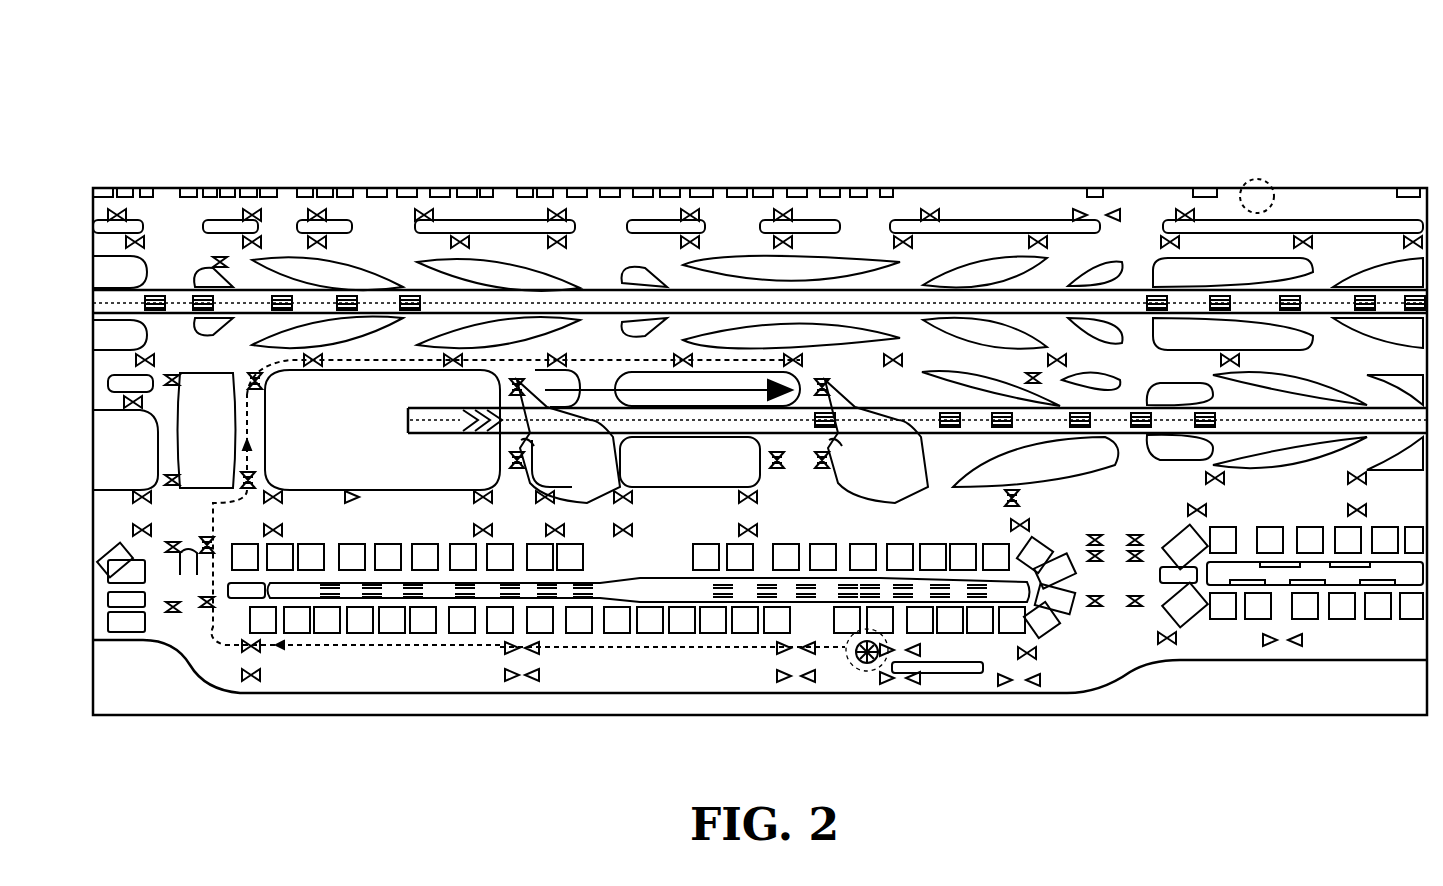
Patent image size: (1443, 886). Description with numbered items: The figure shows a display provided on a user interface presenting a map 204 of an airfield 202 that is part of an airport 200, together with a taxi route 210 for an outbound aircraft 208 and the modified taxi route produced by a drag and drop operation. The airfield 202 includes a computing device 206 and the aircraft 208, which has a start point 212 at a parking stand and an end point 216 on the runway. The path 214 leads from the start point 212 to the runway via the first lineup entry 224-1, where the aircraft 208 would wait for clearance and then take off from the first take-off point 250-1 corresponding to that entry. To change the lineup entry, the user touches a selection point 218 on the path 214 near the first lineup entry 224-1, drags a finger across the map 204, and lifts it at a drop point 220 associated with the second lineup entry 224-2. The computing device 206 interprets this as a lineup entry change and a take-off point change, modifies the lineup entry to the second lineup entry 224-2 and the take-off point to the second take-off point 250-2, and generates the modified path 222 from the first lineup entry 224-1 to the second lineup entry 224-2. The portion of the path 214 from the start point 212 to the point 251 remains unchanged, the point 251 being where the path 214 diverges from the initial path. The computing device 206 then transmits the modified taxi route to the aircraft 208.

The airport 200 is at (313, 75).
The airfield 202 is at (140, 186).
The map 204 is at (92, 330).
The computing device 206 is at (1257, 178).
The aircraft 208 is at (892, 673).
The taxi route 210 is at (428, 652).
The start point 212 is at (850, 662).
The path 214 is at (622, 650).
The end point 216 is at (920, 378).
The selection point 218 is at (533, 378).
The drop point 220 is at (900, 378).
The modified path 222 is at (660, 372).
The first lineup entry 224-1 is at (545, 375).
The second lineup entry 224-2 is at (820, 378).
The first take-off point 250-1 is at (665, 360).
The second take-off point 250-2 is at (905, 408).
The point 251 is at (510, 378).